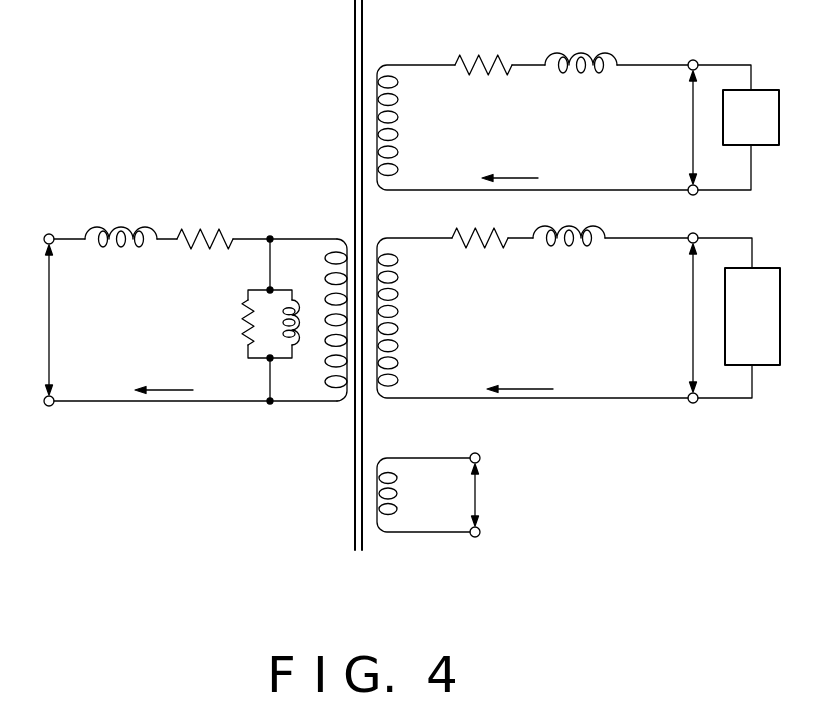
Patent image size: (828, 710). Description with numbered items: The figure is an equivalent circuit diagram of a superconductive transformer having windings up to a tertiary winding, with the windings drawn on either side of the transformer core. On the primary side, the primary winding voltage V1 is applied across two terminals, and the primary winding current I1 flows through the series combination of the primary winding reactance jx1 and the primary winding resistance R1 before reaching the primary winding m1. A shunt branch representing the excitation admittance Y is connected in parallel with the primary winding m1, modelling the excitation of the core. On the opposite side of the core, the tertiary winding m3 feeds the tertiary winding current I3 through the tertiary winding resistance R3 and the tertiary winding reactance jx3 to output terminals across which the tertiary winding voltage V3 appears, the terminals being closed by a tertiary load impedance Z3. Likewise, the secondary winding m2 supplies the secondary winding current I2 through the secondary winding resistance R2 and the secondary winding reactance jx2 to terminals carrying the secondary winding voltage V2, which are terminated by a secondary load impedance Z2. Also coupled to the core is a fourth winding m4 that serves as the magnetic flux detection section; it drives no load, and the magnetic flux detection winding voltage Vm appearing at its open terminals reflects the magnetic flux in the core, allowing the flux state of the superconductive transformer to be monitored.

The primary winding reactance jx1 is at (121, 218).
The primary winding resistance R1 is at (205, 219).
The primary winding voltage V1 is at (34, 320).
The excitation admittance Y is at (251, 345).
The primary winding current I1 is at (164, 374).
The primary winding m1 is at (326, 300).
The tertiary winding m3 is at (397, 88).
The tertiary winding resistance R3 is at (483, 45).
The tertiary winding reactance jx3 is at (581, 44).
The tertiary winding voltage V3 is at (673, 127).
The tertiary winding current I3 is at (510, 161).
The tertiary load impedance Z3 is at (751, 117).
The secondary winding m2 is at (397, 303).
The secondary winding resistance R2 is at (480, 219).
The secondary winding reactance jx2 is at (569, 218).
The secondary winding voltage V2 is at (676, 318).
The secondary winding current I2 is at (520, 374).
The secondary load impedance Z2 is at (752, 316).
The magnetic flux detection winding m4 is at (398, 507).
The magnetic flux detection winding voltage Vm is at (495, 495).